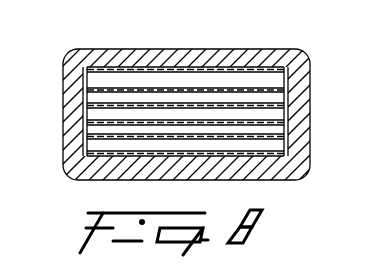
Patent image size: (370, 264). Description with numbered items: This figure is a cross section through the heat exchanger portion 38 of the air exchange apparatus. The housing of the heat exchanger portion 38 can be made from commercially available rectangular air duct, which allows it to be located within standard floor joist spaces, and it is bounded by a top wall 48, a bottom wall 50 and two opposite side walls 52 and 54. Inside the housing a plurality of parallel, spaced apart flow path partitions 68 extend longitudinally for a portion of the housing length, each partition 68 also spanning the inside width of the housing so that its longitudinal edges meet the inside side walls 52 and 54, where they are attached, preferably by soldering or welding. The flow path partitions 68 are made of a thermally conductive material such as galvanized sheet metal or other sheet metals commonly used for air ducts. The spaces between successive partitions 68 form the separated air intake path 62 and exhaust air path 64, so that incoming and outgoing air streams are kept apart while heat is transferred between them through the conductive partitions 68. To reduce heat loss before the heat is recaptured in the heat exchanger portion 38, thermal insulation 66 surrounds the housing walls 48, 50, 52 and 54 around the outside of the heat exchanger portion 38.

The heat exchanger portion 38 is at (211, 35).
The top wall 48 is at (128, 73).
The bottom wall 50 is at (262, 158).
The side wall 52 is at (87, 82).
The side wall 54 is at (286, 94).
The air intake path 62 is at (277, 80).
The exhaust air path 64 is at (278, 113).
The thermal insulation 66 is at (297, 162).
The flow path partition 68 is at (152, 88).